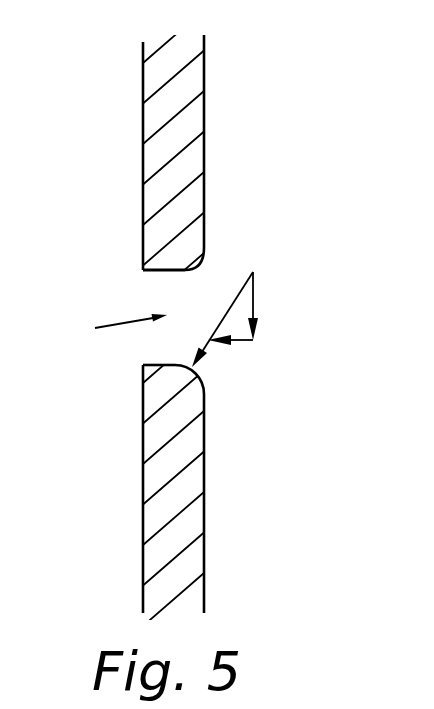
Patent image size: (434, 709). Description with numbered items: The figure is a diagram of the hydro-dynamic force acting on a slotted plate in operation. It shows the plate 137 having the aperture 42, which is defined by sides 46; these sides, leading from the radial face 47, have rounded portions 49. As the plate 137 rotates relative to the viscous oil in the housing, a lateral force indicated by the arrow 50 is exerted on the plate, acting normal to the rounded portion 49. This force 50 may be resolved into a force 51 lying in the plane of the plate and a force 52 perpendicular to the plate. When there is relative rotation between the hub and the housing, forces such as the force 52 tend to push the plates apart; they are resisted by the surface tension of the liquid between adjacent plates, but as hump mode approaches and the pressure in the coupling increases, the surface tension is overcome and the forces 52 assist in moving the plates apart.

The plate 137 is at (188, 118).
The radial face 47 is at (206, 522).
The sides 46 is at (158, 268).
The rounded portions 49 is at (197, 268).
The aperture 42 is at (113, 327).
The force 50 is at (244, 284).
The force in the plane of the plate 51 is at (254, 298).
The force perpendicular to the plate 52 is at (253, 341).